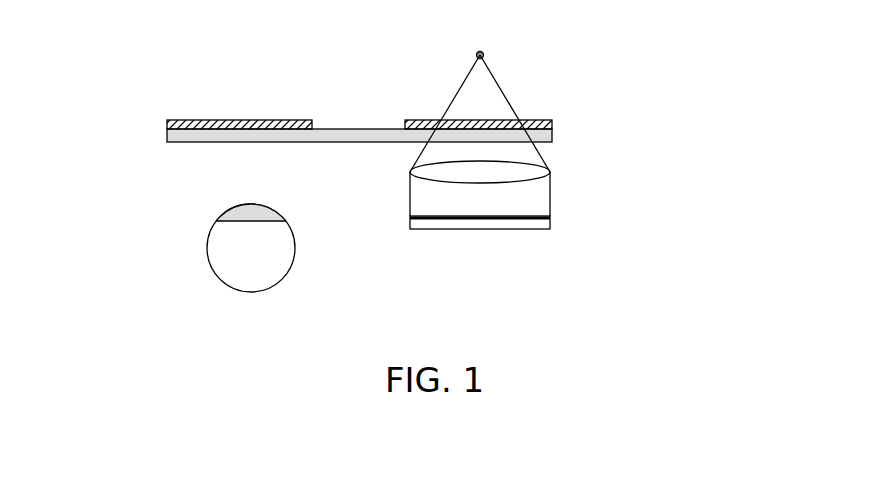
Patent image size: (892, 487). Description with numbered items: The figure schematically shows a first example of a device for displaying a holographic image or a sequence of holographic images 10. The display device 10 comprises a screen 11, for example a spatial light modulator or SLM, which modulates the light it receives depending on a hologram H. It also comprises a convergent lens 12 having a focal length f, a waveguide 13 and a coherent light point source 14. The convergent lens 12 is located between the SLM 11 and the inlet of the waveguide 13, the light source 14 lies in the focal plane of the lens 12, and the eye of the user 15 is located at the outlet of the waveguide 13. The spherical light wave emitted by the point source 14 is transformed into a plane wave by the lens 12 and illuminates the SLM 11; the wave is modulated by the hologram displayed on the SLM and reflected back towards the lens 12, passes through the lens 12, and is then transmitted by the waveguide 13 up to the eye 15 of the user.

The display device 10 is at (128, 84).
The screen 11 is at (551, 225).
The convergent lens 12 is at (551, 172).
The waveguide 13 is at (172, 143).
The coherent light point source 14 is at (485, 54).
The eye of the user 15 is at (218, 280).